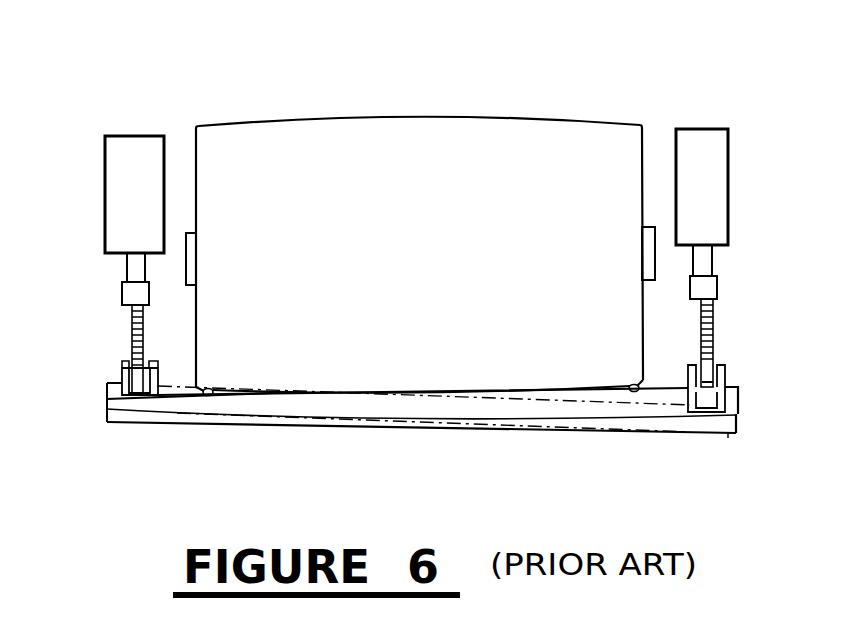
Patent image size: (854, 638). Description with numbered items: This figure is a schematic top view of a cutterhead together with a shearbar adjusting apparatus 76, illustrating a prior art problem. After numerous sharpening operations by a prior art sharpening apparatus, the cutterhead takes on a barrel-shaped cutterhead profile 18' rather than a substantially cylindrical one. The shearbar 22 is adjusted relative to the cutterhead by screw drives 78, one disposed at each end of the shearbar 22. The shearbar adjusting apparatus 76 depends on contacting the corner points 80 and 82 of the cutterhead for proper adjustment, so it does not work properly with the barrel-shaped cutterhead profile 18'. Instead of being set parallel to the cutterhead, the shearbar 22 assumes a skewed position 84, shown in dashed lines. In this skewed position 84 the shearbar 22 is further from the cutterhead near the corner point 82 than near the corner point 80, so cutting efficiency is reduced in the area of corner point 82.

The barrel-shaped cutterhead profile 18' is at (420, 200).
The screw drives 78 is at (114, 328).
The corner point 80 is at (210, 388).
The corner point 82 is at (632, 384).
The shearbar 22 is at (177, 424).
The shearbar adjusting apparatus 76 is at (622, 452).
The skewed position 84 is at (728, 438).